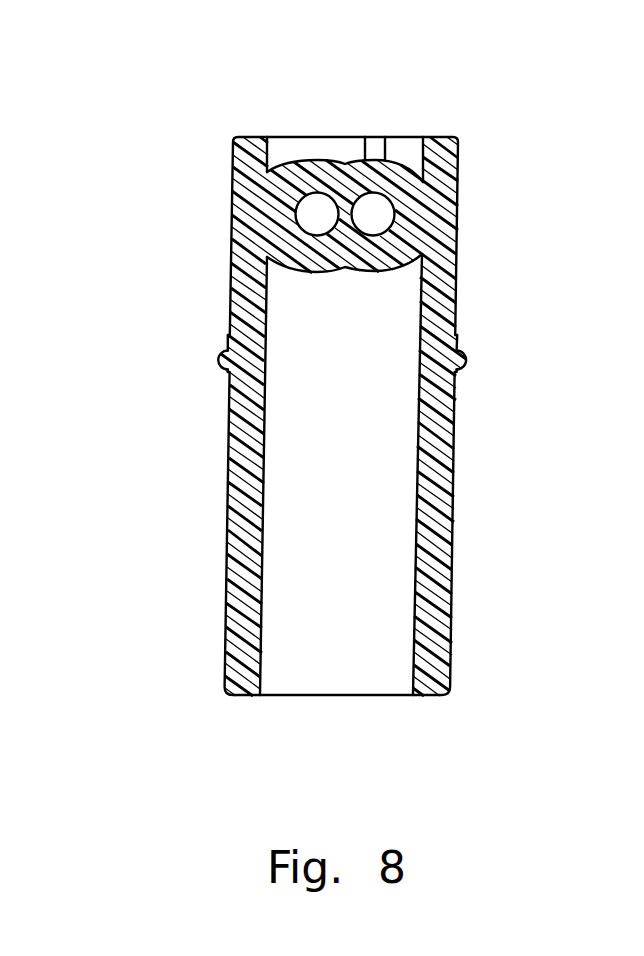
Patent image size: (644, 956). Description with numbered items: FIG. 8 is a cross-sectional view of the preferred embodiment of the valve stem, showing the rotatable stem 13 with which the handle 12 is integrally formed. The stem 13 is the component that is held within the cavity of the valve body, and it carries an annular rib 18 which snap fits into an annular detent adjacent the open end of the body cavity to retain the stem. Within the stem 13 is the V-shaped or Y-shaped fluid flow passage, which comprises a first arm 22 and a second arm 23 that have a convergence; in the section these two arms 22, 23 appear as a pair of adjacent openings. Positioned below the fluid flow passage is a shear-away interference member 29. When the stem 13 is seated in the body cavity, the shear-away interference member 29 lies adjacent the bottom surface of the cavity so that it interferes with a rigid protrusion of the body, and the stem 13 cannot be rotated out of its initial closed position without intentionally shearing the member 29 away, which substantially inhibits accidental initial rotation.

The handle 12 is at (219, 545).
The rotatable stem 13 is at (224, 304).
The annular rib 18 is at (223, 360).
The first arm 22 is at (383, 213).
The second arm 23 is at (300, 221).
The shear-away interference member 29 is at (375, 140).